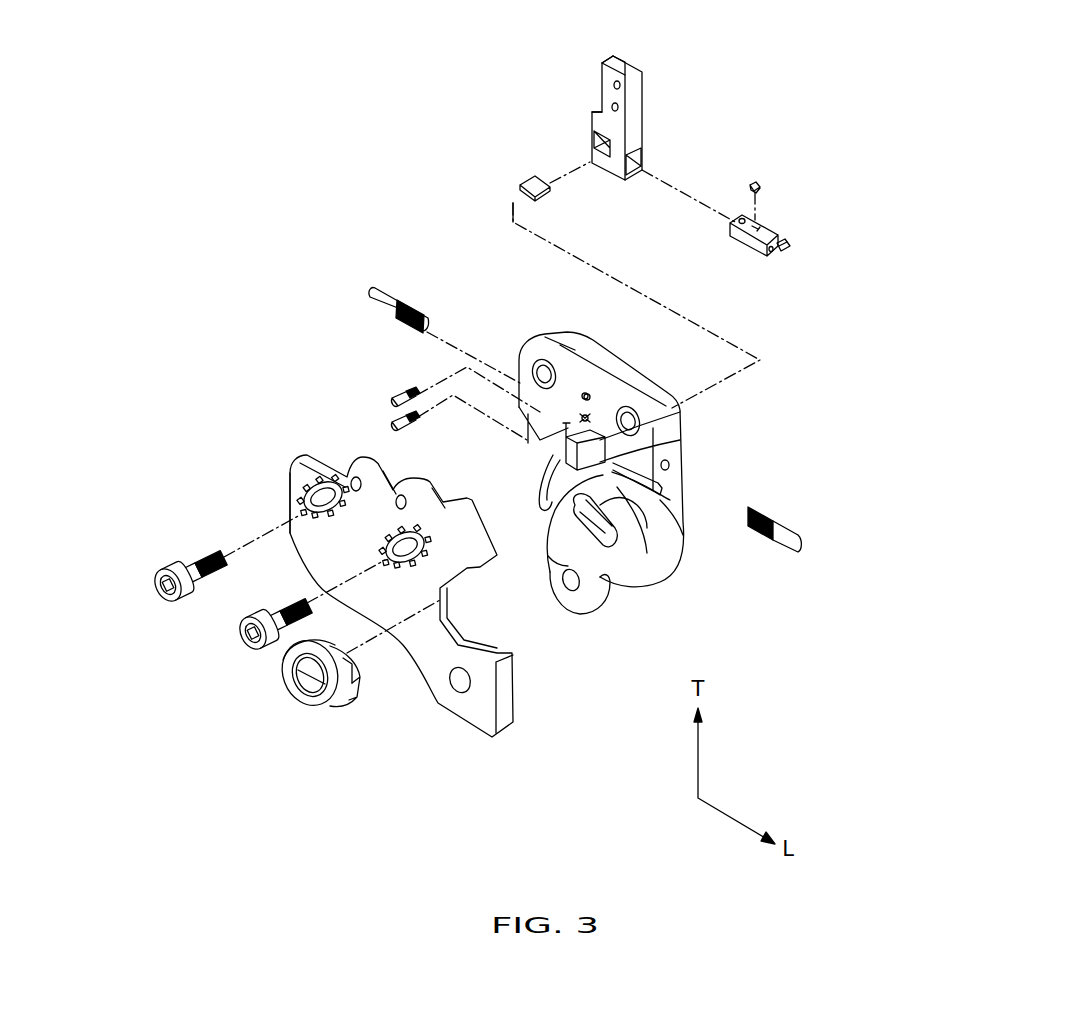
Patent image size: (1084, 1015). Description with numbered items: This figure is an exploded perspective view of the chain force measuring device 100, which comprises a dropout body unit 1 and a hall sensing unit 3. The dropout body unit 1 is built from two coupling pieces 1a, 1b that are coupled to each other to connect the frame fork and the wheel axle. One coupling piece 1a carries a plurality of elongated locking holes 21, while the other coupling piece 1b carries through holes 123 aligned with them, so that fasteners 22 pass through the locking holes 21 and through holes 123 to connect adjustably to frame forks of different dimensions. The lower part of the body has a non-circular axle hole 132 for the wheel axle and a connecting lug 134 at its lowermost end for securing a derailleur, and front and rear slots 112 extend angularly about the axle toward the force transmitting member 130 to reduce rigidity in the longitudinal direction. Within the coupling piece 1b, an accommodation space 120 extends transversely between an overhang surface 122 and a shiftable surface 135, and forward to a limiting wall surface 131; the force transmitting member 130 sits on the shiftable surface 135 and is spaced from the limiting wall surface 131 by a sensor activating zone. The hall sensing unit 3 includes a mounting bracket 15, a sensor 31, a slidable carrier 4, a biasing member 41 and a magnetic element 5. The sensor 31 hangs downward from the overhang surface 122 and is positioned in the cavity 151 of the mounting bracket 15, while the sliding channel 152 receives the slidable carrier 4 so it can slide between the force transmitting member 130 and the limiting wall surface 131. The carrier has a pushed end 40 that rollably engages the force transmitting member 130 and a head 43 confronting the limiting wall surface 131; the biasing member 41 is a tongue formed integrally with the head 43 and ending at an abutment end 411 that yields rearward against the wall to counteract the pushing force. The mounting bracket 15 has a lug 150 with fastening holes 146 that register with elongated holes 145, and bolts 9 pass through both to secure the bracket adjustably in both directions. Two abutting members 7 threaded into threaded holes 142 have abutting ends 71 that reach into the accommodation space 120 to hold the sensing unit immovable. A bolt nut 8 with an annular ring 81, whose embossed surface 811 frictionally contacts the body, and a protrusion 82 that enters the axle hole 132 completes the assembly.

The chain force measuring device 100 is at (275, 246).
The dropout body unit 1 is at (313, 407).
The coupling piece 1a is at (340, 460).
The coupling piece 1b is at (540, 330).
The hall sensing unit 3 is at (575, 66).
The mounting bracket 15 is at (576, 123).
The lug 150 is at (623, 65).
The fastening holes 146 is at (616, 109).
The cavity 151 is at (598, 143).
The sliding channel 152 is at (642, 162).
The sensor 31 is at (527, 183).
The slidable carrier 4 is at (735, 254).
The pushed end 40 is at (740, 220).
The biasing member 41 is at (800, 248).
The abutment end 411 is at (782, 251).
The head 43 is at (767, 257).
The magnetic element 5 is at (760, 184).
The abutting members 7 is at (787, 535).
The abutting ends 71 is at (750, 507).
The bolts 9 is at (392, 422).
The through holes 123 is at (640, 418).
The elongated holes 145 is at (588, 415).
The threaded holes 142 is at (670, 464).
The overhang surface 122 is at (668, 418).
The accommodation space 120 is at (655, 444).
The force transmitting member 130 is at (570, 463).
The limiting wall surface 131 is at (607, 478).
The front and rear slots 112 is at (647, 556).
The shiftable surface 135 is at (597, 530).
The axle hole 132 is at (547, 567).
The connecting lug 134 is at (565, 613).
The locking holes 21 is at (380, 547).
The fasteners 22 is at (253, 653).
The bolt nut 8 is at (280, 708).
The annular ring 81 is at (307, 707).
The protrusion 82 is at (367, 680).
The embossed surface 811 is at (350, 665).